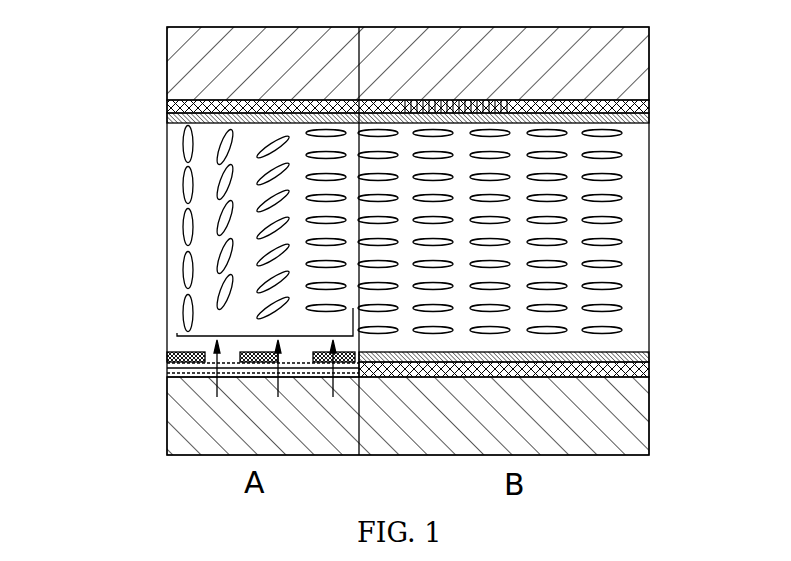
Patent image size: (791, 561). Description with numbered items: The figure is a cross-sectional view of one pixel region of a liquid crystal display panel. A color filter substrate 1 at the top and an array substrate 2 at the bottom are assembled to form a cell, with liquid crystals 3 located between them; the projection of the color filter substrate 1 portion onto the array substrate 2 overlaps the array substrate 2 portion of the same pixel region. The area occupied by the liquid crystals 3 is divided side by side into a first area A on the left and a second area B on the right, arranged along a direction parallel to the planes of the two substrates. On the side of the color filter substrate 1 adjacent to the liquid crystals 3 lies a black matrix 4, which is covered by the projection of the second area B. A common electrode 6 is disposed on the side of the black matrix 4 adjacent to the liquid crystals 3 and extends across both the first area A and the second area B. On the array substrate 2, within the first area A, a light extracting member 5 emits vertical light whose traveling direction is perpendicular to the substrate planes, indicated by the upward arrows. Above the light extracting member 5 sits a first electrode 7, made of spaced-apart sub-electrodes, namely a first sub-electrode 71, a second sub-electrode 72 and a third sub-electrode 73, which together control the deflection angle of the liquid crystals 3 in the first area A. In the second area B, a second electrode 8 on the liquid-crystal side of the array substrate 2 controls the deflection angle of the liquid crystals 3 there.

The color filter substrate 1 is at (627, 62).
The array substrate 2 is at (622, 410).
The liquid crystals 3 is at (603, 288).
The black matrix 4 is at (627, 123).
The light extracting member 5 is at (198, 370).
The common electrode 6 is at (185, 120).
The first electrode 7 is at (186, 332).
The first sub-electrode 71 is at (180, 357).
The second sub-electrode 72 is at (353, 308).
The third sub-electrode 73 is at (313, 352).
The second electrode 8 is at (645, 363).